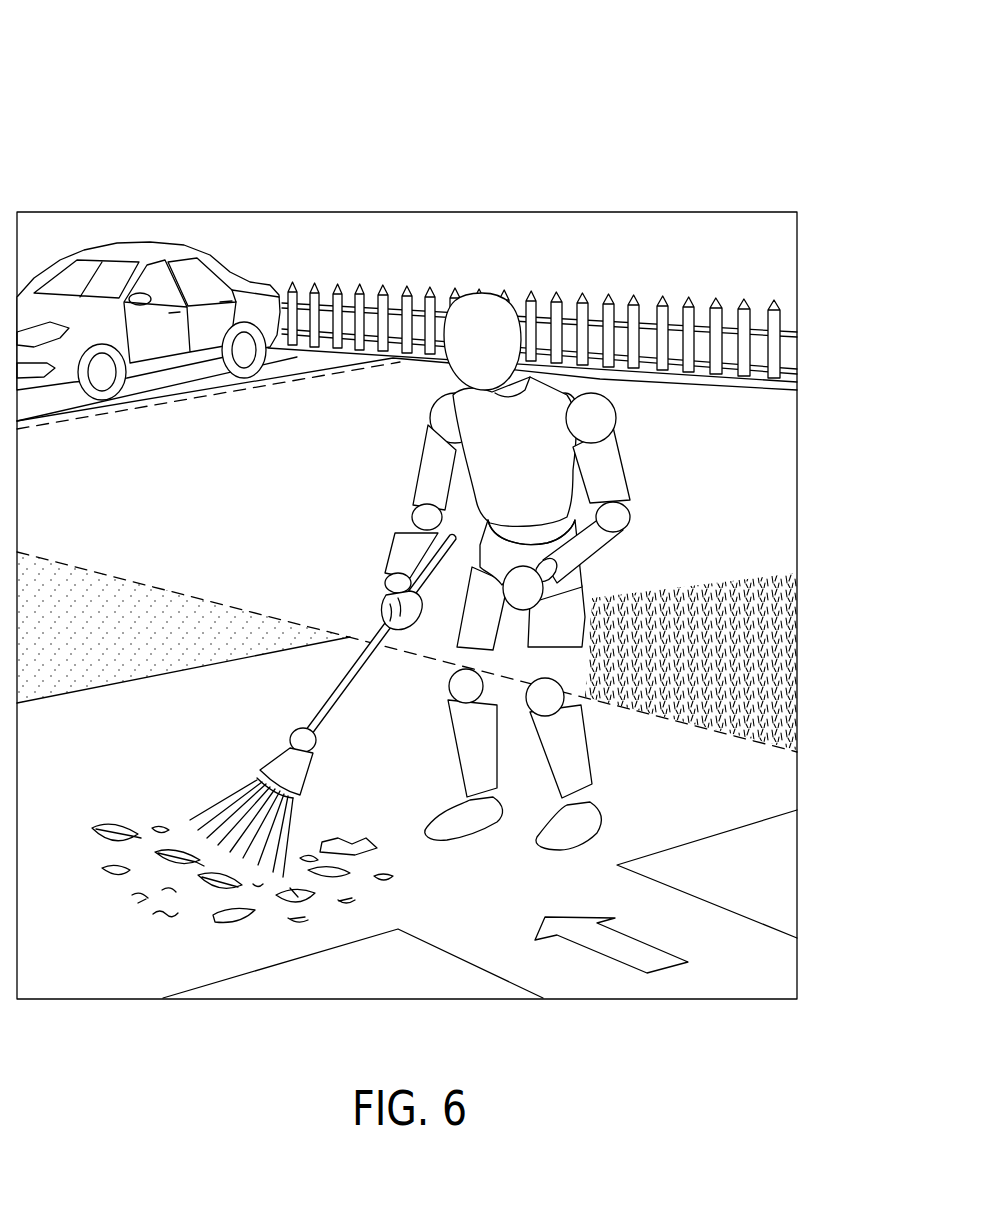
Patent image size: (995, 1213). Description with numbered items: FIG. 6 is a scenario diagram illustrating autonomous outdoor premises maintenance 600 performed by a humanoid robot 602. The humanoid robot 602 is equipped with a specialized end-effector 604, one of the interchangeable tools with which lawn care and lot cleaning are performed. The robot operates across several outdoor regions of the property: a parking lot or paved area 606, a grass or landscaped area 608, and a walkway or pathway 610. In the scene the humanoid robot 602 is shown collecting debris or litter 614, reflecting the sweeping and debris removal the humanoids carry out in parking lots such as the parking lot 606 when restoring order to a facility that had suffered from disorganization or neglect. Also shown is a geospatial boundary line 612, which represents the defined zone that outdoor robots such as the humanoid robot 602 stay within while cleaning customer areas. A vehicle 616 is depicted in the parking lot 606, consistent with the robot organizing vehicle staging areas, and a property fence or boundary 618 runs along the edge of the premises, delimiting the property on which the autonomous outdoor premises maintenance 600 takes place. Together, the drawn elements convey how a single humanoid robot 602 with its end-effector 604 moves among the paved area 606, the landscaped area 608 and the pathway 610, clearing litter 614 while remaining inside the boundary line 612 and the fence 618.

The autonomous outdoor premises maintenance 600 is at (122, 96).
The humanoid robot 602 is at (480, 295).
The specialized end-effector 604 is at (378, 598).
The parking lot/paved area 606 is at (62, 406).
The grass/landscaped area 608 is at (718, 550).
The walkway/pathway 610 is at (700, 938).
The geospatial boundary line 612 is at (218, 392).
The debris/litter 614 is at (103, 798).
The vehicle 616 is at (282, 258).
The property fence/boundary 618 is at (664, 300).